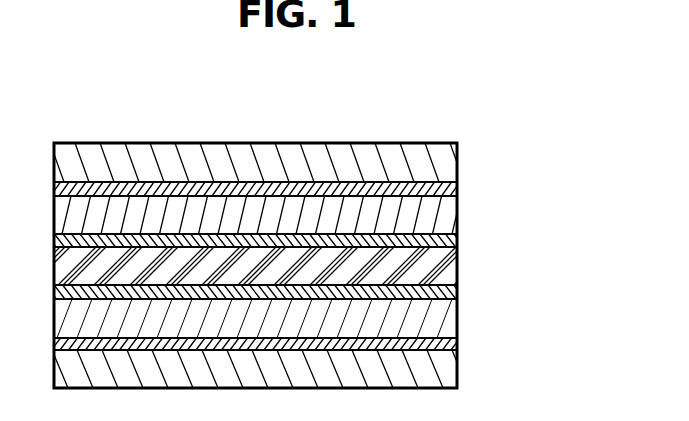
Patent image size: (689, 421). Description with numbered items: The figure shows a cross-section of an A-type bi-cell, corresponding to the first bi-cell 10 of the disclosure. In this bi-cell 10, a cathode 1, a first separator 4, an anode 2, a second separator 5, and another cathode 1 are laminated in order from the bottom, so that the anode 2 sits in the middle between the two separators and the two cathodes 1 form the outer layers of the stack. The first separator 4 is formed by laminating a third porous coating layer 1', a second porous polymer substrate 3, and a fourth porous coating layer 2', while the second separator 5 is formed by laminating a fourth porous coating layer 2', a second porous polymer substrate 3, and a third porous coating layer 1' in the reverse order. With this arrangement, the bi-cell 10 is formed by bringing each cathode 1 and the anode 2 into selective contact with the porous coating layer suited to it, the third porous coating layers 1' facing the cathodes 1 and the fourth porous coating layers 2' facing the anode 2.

The first bi-cell 10 is at (272, 125).
The cathode 1 is at (280, 265).
The third porous coating layer 1' is at (281, 266).
The second porous polymer substrate 3 is at (445, 220).
The fourth porous coating layer 2' is at (281, 268).
The anode 2 is at (280, 266).
The second separator 5 is at (513, 189).
The first separator 4 is at (513, 292).